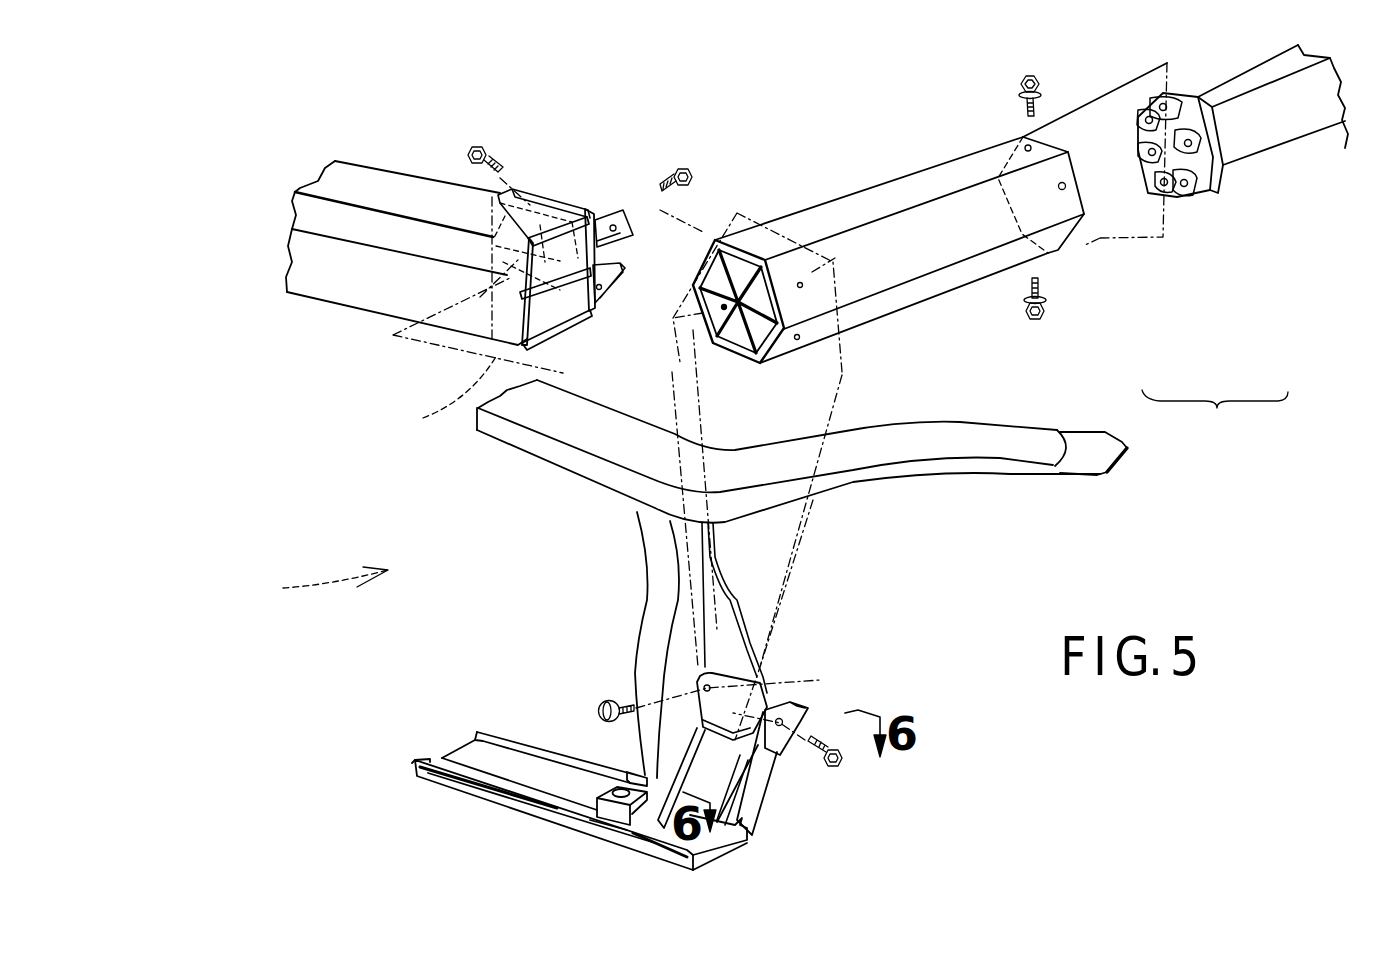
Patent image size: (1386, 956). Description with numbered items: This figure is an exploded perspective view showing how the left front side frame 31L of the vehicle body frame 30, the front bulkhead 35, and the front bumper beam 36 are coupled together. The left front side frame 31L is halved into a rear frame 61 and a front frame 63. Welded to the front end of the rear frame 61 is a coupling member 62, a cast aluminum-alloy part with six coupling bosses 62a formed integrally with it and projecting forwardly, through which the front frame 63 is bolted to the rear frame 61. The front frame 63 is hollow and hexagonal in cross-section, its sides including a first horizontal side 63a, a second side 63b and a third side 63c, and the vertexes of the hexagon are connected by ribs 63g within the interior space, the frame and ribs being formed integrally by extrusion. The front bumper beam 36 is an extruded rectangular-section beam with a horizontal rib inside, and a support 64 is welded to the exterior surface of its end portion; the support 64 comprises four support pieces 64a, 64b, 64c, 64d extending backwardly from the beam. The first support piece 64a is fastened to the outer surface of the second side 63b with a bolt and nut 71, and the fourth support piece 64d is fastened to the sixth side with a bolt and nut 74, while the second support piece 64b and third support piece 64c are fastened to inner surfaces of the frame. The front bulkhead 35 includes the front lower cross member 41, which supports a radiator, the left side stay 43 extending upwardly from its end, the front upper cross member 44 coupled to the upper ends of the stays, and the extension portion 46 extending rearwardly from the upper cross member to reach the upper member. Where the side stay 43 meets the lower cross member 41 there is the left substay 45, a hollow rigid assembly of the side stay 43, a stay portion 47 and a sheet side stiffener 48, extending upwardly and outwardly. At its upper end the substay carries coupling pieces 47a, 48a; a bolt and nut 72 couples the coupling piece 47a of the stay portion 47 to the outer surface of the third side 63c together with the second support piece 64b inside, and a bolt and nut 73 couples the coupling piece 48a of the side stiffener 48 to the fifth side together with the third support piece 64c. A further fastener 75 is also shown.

The vehicle body frame 30 is at (313, 587).
The left front side frame 31L is at (1215, 418).
The front bulkhead 35 is at (495, 805).
The front bumper beam 36 is at (347, 295).
The front lower cross member 41 is at (440, 782).
The left side stay 43 is at (660, 597).
The front upper cross member 44 is at (532, 442).
The left substay 45 is at (740, 790).
The extension portion 46 is at (983, 447).
The stay portion 47 is at (775, 755).
The coupling piece 47a is at (770, 705).
The side stiffener 48 is at (715, 765).
The coupling piece 48a is at (712, 684).
The rear frame 61 is at (1300, 158).
The coupling member 62 is at (1218, 172).
The coupling boss 62a is at (1138, 150).
The front frame 63 is at (1050, 250).
The first horizontal side 63a is at (868, 200).
The second side 63b is at (908, 255).
The third side 63c is at (857, 313).
The rib 63g is at (748, 272).
The support 64 is at (527, 190).
The first support piece 64a is at (615, 210).
The second support piece 64b is at (600, 292).
The third support piece 64c is at (429, 398).
The fourth support piece 64d is at (548, 197).
The bolt and nut 71 is at (690, 170).
The bolt and nut 72 is at (845, 760).
The bolt and nut 73 is at (598, 711).
The bolt and nut 74 is at (468, 148).
The bolt 75 is at (1024, 80).